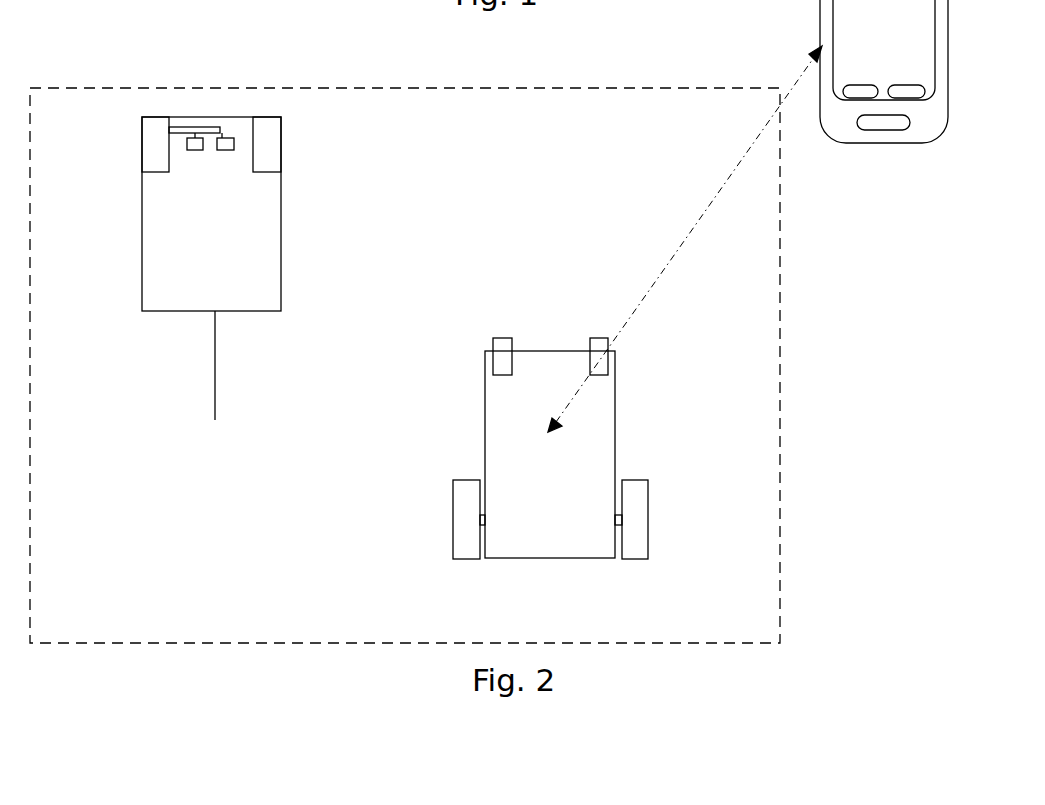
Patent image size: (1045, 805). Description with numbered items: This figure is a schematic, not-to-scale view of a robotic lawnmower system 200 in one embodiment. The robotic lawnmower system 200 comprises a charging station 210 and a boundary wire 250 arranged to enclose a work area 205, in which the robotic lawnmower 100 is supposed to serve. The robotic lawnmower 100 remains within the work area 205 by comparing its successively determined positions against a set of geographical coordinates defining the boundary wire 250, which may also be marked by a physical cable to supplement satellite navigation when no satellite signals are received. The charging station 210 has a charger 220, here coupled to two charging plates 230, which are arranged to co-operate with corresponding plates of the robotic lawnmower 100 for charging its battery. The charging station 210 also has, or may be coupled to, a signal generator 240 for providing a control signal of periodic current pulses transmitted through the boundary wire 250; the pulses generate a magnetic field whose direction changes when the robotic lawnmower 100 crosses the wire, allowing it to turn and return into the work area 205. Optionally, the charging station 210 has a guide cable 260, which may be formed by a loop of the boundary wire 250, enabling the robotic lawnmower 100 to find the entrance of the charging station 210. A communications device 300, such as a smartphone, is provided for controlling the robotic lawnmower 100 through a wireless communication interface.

The robotic lawnmower 100 is at (615, 473).
The robotic lawnmower system 200 is at (112, 114).
The work area 205 is at (279, 606).
The charging station 210 is at (142, 177).
The charger 220 is at (152, 127).
The charging plates 230 is at (196, 137).
The signal generator 240 is at (283, 155).
The boundary wire 250 is at (170, 645).
The guide cable 260 is at (215, 344).
The communications device 300 is at (884, 71).